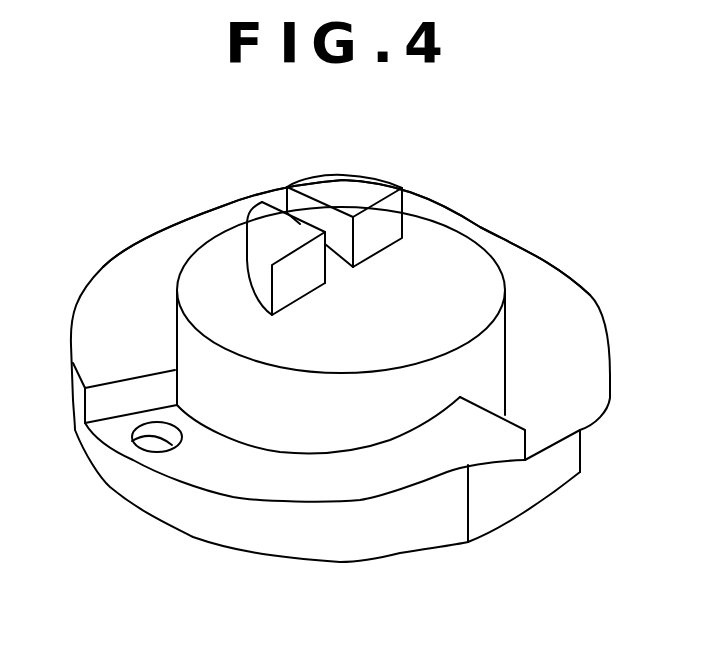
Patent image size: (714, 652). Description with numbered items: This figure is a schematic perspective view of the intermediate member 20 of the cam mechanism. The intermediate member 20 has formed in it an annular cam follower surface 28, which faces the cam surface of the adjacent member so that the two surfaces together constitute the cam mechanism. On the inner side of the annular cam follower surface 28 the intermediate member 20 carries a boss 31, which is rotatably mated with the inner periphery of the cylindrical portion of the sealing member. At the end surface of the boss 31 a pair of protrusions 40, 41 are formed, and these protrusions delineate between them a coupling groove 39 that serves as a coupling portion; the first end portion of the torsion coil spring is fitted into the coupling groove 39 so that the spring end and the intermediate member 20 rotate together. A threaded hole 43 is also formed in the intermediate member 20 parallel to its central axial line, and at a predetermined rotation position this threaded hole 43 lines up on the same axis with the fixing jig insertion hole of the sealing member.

The intermediate member 20 is at (580, 278).
The annular cam follower surface 28 is at (118, 318).
The boss 31 is at (488, 363).
The coupling groove 39 is at (310, 225).
The protrusion 40 is at (358, 195).
The protrusion 41 is at (270, 232).
The threaded hole 43 is at (137, 440).